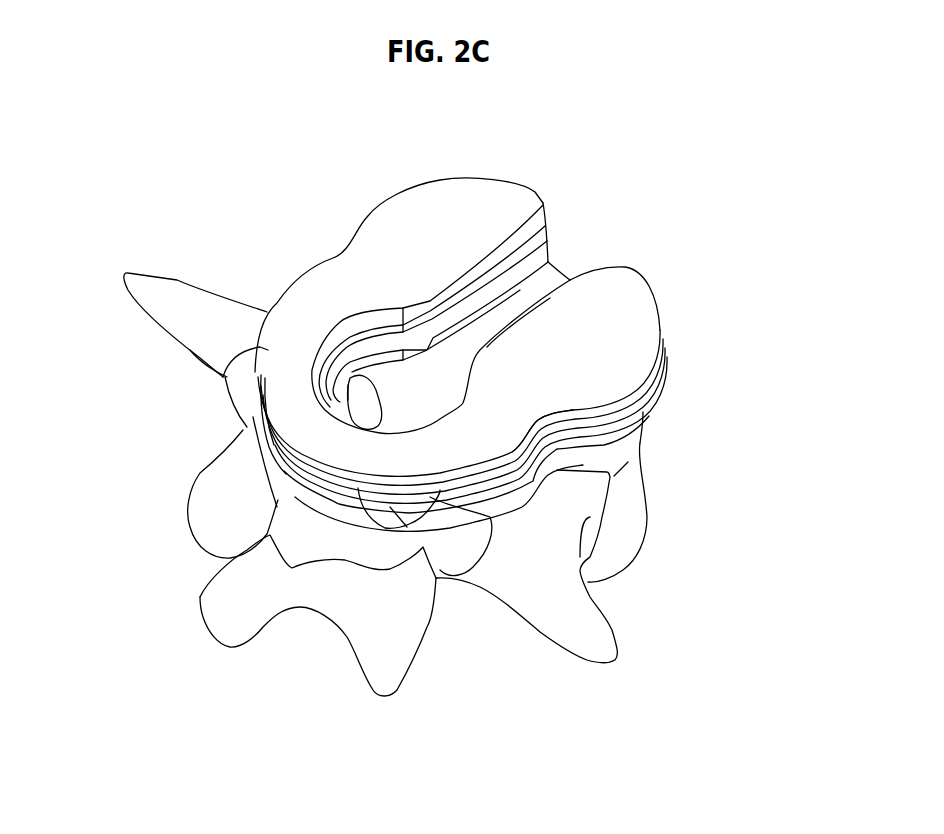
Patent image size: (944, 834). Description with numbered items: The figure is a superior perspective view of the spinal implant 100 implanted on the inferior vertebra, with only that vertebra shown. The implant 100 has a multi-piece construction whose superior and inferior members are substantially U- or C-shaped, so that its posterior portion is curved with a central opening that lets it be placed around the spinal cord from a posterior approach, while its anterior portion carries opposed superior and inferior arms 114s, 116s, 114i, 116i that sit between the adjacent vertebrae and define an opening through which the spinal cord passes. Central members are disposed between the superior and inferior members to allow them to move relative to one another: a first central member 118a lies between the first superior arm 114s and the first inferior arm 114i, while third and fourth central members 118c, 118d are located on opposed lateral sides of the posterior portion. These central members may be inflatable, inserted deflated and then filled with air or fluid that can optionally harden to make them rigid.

The spinal implant 100 is at (637, 153).
The second superior arm 116s is at (470, 178).
The second inferior arm 116i is at (552, 252).
The first superior arm 114s is at (660, 308).
The first inferior arm 114i is at (664, 388).
The first central member 118a is at (580, 430).
The third central member 118c is at (388, 506).
The fourth central member 118d is at (237, 413).